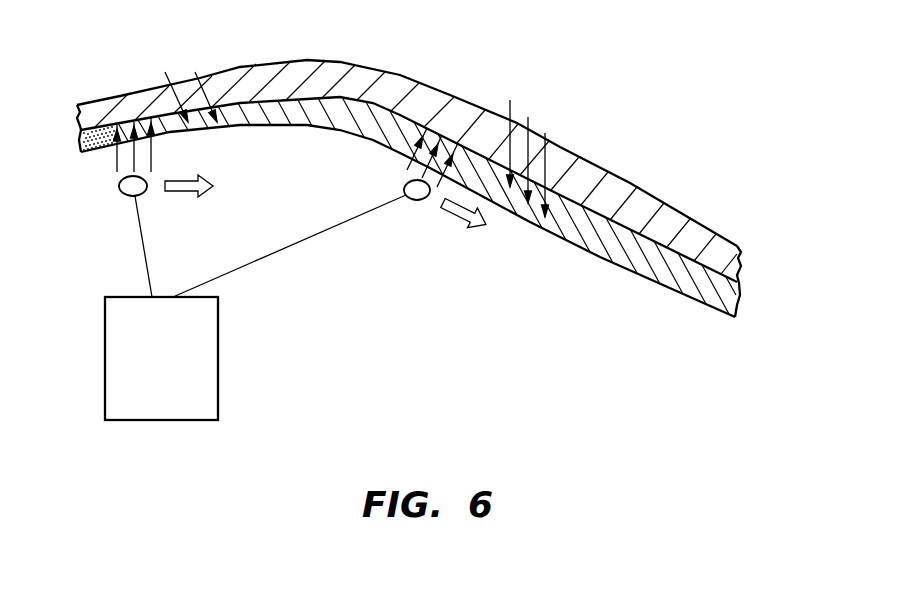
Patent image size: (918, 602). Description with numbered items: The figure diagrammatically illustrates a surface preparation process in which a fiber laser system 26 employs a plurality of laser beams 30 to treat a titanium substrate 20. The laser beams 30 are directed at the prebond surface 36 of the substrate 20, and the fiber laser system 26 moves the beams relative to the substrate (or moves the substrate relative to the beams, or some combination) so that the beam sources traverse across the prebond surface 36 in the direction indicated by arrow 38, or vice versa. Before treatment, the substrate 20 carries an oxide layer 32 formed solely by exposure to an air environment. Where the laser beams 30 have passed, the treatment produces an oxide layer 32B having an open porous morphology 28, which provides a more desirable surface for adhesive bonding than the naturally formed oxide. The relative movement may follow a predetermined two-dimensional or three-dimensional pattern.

The titanium substrate 20 is at (768, 256).
The fiber laser system 26 is at (160, 420).
The open porous morphology 28 is at (77, 147).
The laser beam 30 is at (125, 195).
The oxide layer 32 is at (740, 300).
The oxide layer with open porous morphology 32B is at (98, 172).
The prebond surface 36 is at (560, 275).
The arrow indicating direction of traversal 38 is at (183, 193).